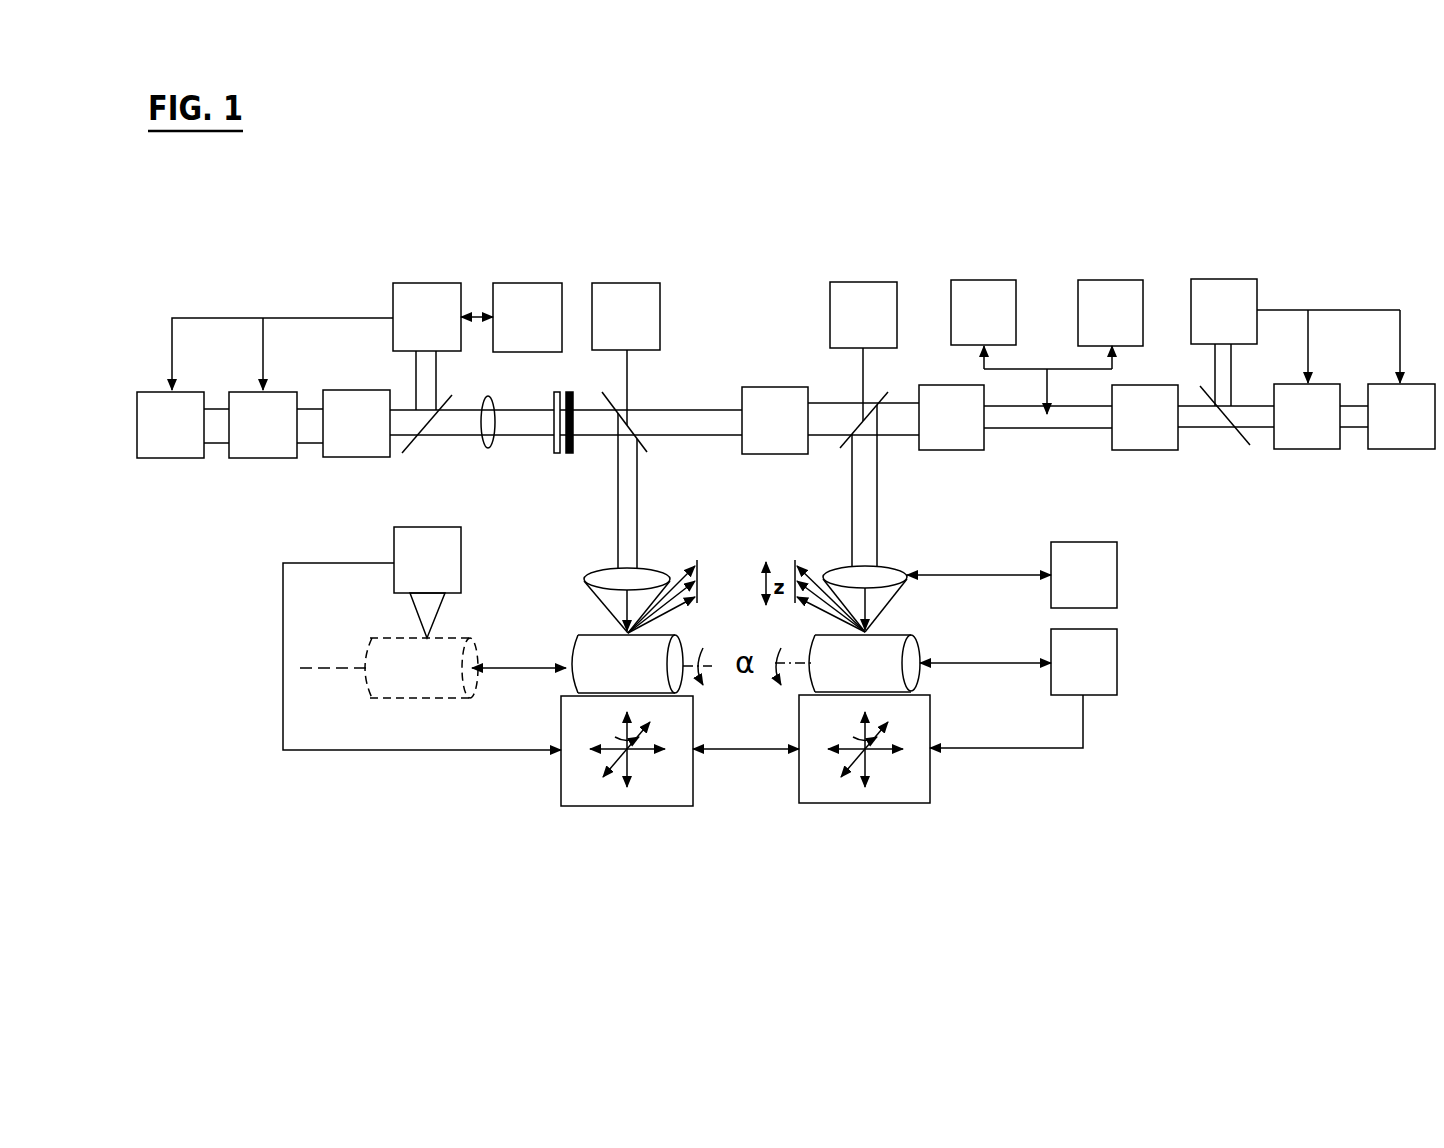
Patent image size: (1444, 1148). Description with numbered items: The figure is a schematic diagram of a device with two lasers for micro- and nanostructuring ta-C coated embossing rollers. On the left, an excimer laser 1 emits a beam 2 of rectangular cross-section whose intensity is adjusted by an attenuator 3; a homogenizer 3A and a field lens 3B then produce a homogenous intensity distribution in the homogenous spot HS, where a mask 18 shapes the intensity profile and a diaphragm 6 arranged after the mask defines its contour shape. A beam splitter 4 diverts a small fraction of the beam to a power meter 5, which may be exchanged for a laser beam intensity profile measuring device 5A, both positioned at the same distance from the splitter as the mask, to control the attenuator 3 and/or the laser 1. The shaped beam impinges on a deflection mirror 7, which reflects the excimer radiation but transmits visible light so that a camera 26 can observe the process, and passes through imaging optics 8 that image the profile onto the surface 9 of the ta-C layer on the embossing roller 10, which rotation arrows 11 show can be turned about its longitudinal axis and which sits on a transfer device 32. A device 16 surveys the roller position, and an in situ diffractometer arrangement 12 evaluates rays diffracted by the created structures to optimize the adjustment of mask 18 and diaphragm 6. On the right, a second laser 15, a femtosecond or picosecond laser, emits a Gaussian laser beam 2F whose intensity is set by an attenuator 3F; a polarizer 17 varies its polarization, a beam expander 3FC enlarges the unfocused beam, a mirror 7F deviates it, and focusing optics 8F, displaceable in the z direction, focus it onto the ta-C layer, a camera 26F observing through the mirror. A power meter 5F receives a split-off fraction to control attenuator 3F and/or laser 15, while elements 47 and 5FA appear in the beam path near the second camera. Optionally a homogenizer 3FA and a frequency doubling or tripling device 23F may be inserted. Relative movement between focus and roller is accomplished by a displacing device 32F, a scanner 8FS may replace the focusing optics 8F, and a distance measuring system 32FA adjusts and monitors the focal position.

The excimer laser 1 is at (179, 432).
The beam 2 is at (217, 432).
The attenuator 3 is at (265, 438).
The homogenizer 3A is at (362, 437).
The field lens 3B is at (490, 435).
The beam splitter 4 is at (427, 456).
The power meter 5 is at (425, 302).
The laser beam intensity profile measuring device 5A is at (540, 308).
The diaphragm 6 is at (575, 461).
The deflection mirror 7 is at (650, 443).
The imaging optics 8 is at (647, 575).
The surface 9 is at (662, 632).
The embossing roller 10 is at (600, 652).
The rotation arrows 11 is at (708, 685).
The in situ diffractometer arrangement 12 is at (788, 557).
The second laser 15 is at (1399, 426).
The device for the position survey of the embossing roller 16 is at (442, 562).
The polarizer 17 is at (1144, 428).
The mask 18 is at (553, 437).
The camera 26 is at (628, 297).
The camera 26F is at (863, 303).
The transfer device 32 is at (663, 785).
The displacing device 32F is at (893, 778).
The distance measuring system 32FA is at (1103, 670).
The mirror F 47 is at (1227, 465).
The laser beam 2F is at (1354, 414).
The attenuator 3F is at (1317, 414).
The homogenizer 3FA is at (1113, 303).
The beam expander 3FC is at (949, 431).
The power meter 5F is at (1238, 301).
The detector F 5FA is at (773, 400).
The mirror 7F is at (853, 430).
The focusing optics 8F is at (845, 573).
The scanner 8FS is at (1103, 568).
The device for doubling or tripling the frequency 23F is at (990, 303).
The homogenous spot HS is at (550, 393).